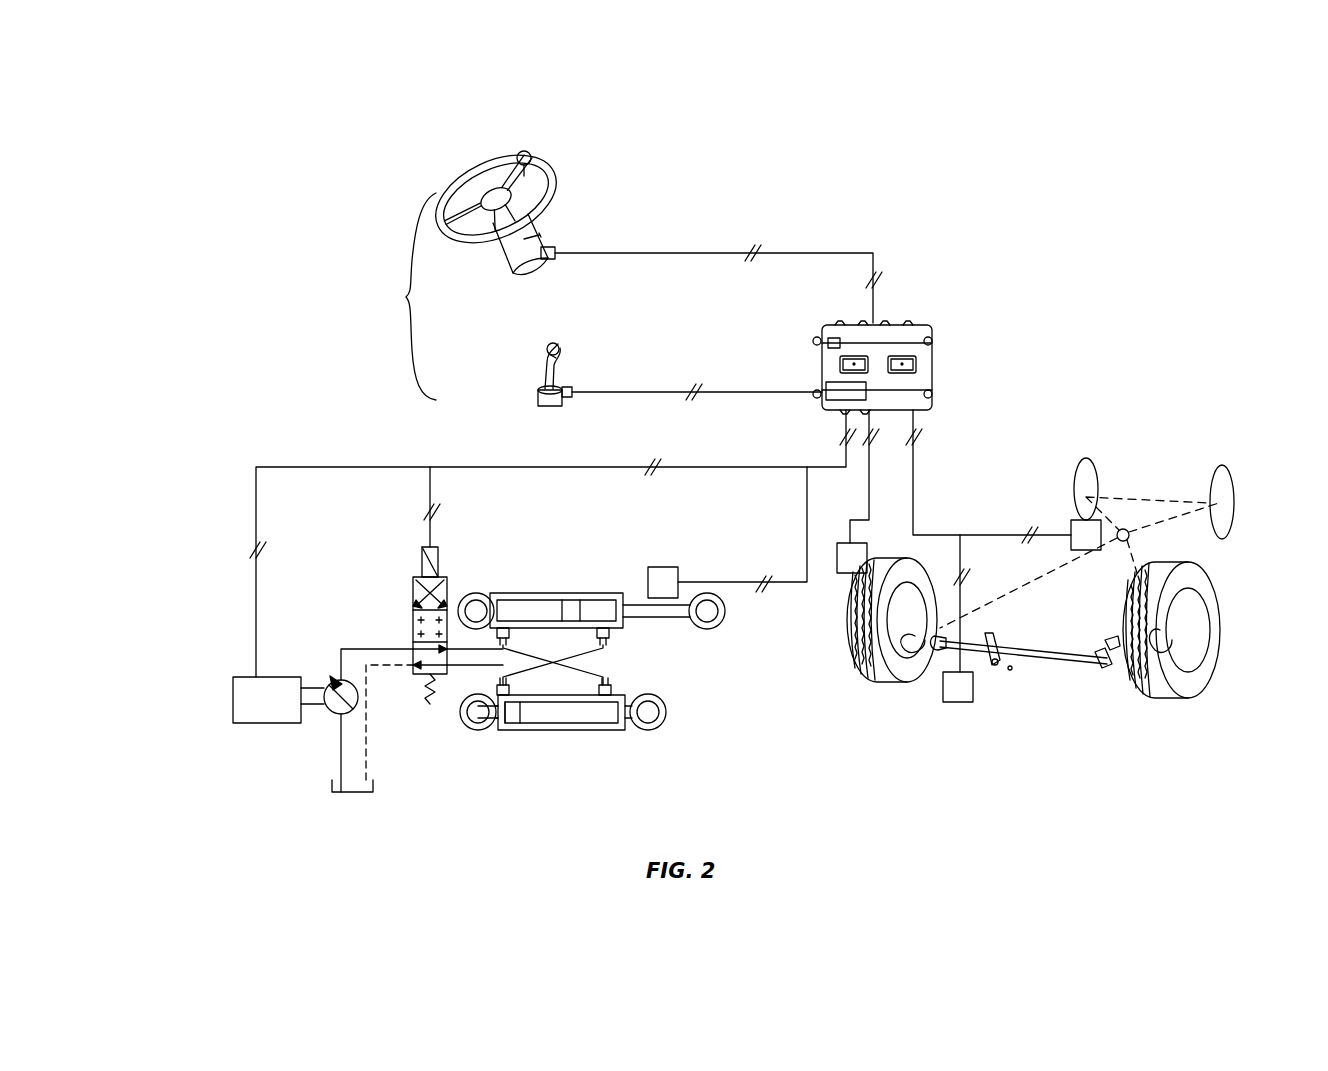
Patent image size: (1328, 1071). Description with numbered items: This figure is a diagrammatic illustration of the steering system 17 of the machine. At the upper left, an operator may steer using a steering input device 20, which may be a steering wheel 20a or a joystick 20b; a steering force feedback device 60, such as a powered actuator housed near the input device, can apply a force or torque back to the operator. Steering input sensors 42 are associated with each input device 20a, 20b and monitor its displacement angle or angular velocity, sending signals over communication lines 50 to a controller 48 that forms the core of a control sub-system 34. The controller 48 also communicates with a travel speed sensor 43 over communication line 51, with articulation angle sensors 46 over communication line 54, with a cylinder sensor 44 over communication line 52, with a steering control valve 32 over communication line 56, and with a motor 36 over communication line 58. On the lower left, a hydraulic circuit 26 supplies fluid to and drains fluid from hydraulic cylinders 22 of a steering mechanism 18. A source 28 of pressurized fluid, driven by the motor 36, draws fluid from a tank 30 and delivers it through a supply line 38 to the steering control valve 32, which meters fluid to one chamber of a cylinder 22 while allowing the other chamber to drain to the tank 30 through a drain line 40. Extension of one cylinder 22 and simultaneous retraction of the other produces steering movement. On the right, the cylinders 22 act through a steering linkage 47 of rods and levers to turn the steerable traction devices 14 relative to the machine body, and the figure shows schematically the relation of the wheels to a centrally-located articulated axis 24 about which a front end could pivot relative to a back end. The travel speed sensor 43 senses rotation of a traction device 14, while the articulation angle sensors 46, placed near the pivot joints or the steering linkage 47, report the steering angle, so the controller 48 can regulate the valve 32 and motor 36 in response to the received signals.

The steering system 17 is at (244, 45).
The steering input device 20 is at (372, 248).
The operator input device (steering wheel) 20a is at (547, 168).
The operator input device (joystick) 20b is at (545, 371).
The steering force feedback device 60 is at (512, 262).
The steering input sensor 42 is at (548, 259).
The communication line 50 is at (804, 251).
The control sub-system 34 is at (900, 222).
The controller 48 is at (916, 322).
The communication line 54 is at (925, 470).
The communication line 51 is at (869, 492).
The travel speed sensor 43 is at (864, 569).
The articulation angle sensor 46 is at (970, 698).
The centrally-located articulated axis 24 is at (1128, 530).
The traction device 14 is at (1233, 518).
The steering linkage 47 is at (1012, 668).
The communication line 58 is at (256, 518).
The communication line 56 is at (430, 528).
The steering control valve 32 is at (447, 558).
The hydraulic cylinder 22 is at (595, 592).
The cylinder sensor 44 is at (675, 593).
The communication line 52 is at (766, 590).
The supply line 38 is at (376, 647).
The motor 36 is at (280, 676).
The source of pressurized fluid 28 is at (337, 714).
The drain line 40 is at (366, 752).
The tank 30 is at (373, 788).
The hydraulic circuit 26 is at (645, 662).
The steering mechanism 18 is at (645, 753).